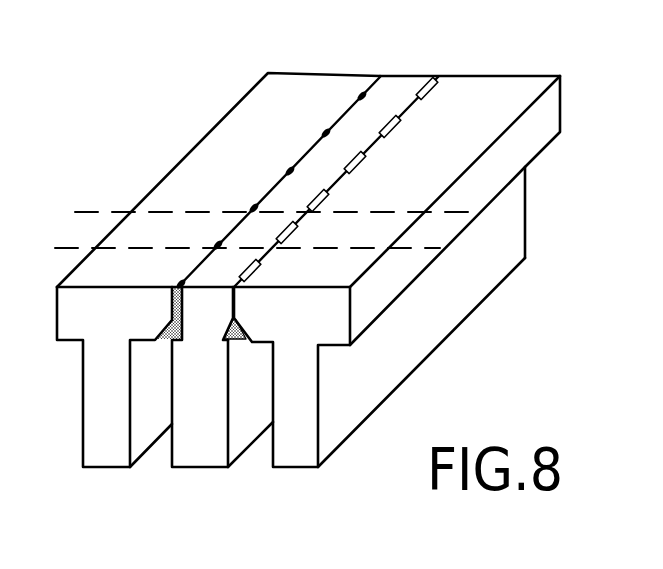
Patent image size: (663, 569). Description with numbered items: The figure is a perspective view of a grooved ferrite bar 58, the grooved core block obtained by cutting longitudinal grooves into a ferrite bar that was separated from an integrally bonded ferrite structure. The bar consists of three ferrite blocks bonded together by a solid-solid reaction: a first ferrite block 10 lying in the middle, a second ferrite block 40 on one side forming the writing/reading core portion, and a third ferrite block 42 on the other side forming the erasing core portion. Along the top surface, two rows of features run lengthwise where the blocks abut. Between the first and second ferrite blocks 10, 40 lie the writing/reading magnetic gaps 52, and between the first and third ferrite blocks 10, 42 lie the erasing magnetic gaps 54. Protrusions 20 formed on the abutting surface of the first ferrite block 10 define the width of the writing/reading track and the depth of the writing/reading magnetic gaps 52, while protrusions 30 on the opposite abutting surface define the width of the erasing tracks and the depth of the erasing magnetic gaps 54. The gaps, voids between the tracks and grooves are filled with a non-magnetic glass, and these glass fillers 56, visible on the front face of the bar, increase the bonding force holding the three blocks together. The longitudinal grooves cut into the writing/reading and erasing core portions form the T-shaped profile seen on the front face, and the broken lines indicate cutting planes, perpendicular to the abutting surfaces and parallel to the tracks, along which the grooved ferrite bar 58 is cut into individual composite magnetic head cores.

The first ferrite block 10 is at (408, 83).
The protrusions 20 is at (237, 224).
The protrusions 30 is at (303, 216).
The second ferrite block 40 is at (318, 87).
The third ferrite block 42 is at (513, 90).
The writing/reading magnetic gaps 52 is at (302, 153).
The erasing magnetic gaps 54 is at (379, 139).
The glass fillers 56 is at (233, 341).
The grooved ferrite bar 58 is at (136, 161).